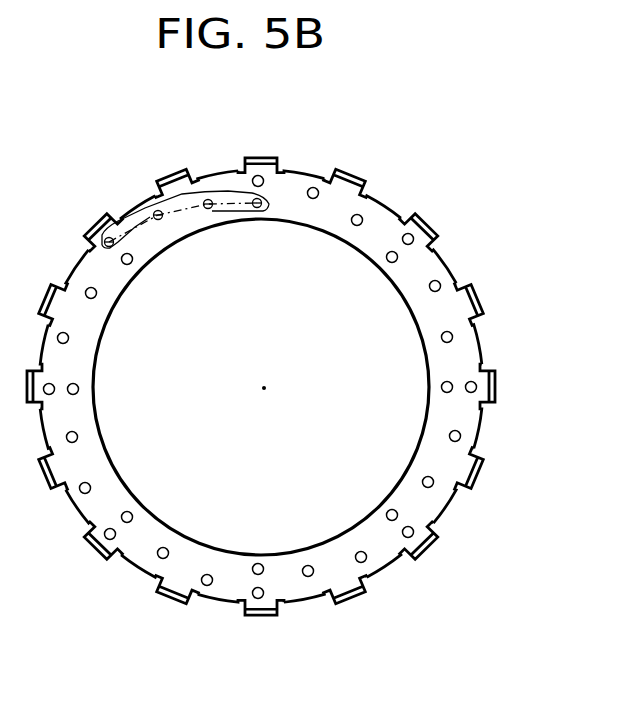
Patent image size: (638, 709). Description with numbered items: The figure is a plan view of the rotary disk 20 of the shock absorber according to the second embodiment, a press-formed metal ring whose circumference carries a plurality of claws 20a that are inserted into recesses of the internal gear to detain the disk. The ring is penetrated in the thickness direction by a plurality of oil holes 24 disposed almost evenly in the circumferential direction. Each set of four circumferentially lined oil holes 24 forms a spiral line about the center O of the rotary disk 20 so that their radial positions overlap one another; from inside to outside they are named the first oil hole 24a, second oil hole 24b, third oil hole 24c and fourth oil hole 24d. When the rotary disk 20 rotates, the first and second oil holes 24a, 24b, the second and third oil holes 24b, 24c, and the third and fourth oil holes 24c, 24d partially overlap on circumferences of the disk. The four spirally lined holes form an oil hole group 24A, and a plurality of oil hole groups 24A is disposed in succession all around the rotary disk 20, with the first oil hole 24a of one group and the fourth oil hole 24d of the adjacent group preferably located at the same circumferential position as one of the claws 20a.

The rotary disk 20 is at (398, 172).
The claw 20a is at (258, 157).
The oil hole 24 is at (311, 188).
The oil hole group 24A is at (172, 190).
The first oil hole 24a is at (258, 208).
The second oil hole 24b is at (207, 209).
The third oil hole 24c is at (156, 220).
The fourth oil hole 24d is at (109, 247).